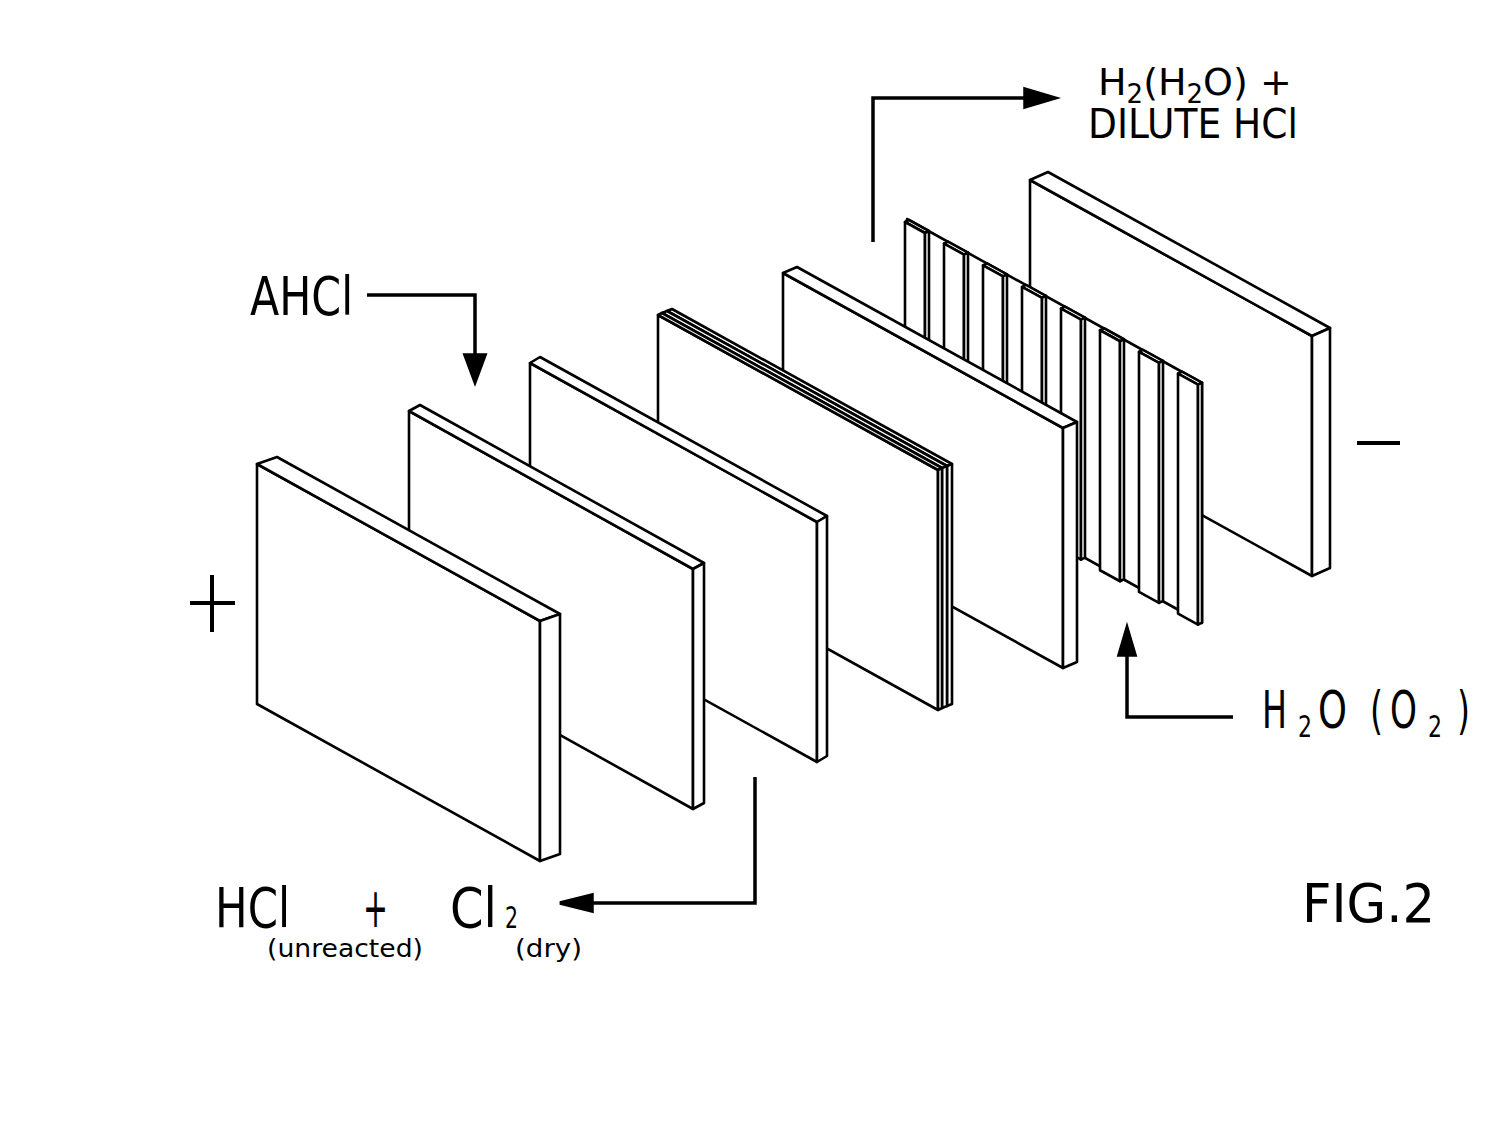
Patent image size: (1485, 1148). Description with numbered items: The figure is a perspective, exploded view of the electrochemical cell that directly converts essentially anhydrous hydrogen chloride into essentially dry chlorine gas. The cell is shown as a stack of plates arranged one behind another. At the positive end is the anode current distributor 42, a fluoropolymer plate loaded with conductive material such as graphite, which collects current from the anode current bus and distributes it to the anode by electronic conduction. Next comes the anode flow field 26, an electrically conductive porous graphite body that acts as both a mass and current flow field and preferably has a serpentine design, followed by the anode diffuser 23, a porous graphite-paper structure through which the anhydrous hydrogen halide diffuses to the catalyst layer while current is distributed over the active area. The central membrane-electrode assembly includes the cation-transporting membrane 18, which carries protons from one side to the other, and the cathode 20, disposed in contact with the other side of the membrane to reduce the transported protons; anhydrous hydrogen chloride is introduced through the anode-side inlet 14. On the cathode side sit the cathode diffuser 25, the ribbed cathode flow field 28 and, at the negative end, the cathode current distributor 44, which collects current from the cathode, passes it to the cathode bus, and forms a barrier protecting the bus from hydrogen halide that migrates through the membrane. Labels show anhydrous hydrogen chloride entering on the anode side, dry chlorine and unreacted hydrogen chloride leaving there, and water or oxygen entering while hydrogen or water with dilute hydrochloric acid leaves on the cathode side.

The anode-side inlet 14 is at (905, 697).
The cation-transporting membrane 18 is at (948, 713).
The cathode 20 is at (955, 694).
The anode diffuser 23 is at (774, 737).
The cathode diffuser 25 is at (1022, 647).
The anode flow field 26 is at (658, 788).
The cathode flow field 28 is at (1195, 620).
The anode current distributor 42 is at (381, 773).
The cathode current distributor 44 is at (1288, 560).